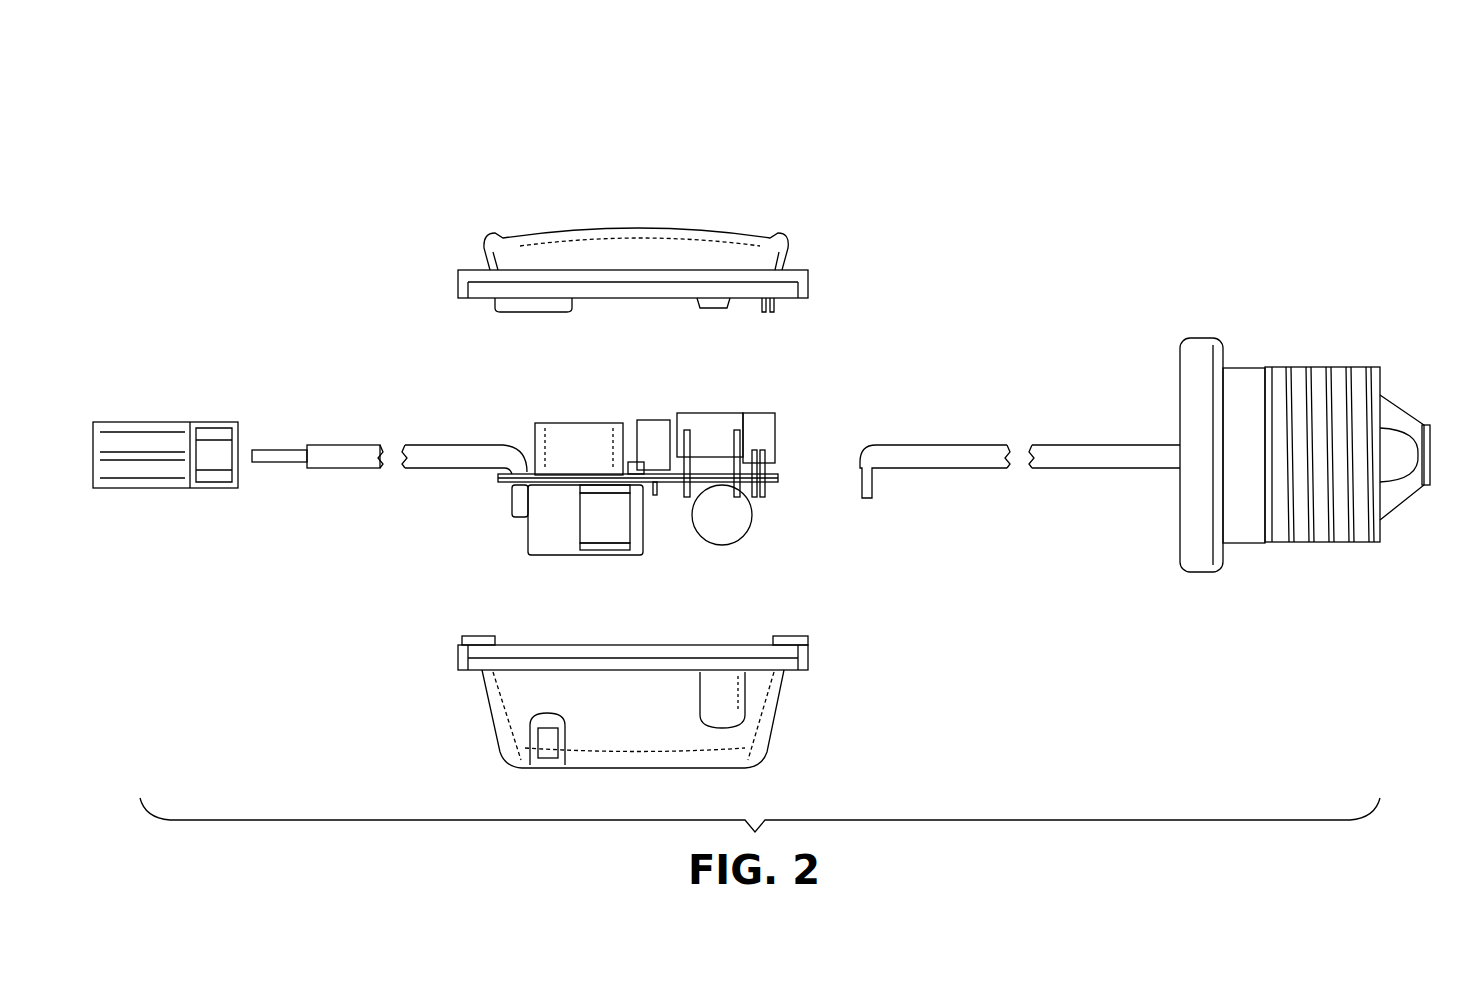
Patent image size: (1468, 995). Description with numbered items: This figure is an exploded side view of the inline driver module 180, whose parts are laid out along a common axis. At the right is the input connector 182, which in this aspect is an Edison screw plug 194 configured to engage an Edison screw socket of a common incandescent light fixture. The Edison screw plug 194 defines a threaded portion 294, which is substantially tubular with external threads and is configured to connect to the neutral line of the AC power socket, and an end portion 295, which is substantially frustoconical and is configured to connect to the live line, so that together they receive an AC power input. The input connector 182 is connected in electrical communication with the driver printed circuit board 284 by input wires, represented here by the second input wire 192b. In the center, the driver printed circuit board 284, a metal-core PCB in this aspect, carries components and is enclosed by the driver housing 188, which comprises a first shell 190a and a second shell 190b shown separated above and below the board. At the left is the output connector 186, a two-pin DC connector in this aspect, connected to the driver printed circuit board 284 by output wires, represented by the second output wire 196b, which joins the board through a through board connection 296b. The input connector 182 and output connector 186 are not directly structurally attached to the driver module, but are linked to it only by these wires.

The inline driver module 180 is at (585, 85).
The input connector 182 is at (1203, 350).
The output connector 186 is at (150, 445).
The driver housing 188 is at (500, 252).
The first shell 190a is at (737, 228).
The second shell 190b is at (785, 722).
The second input wire 192b is at (948, 455).
The Edison screw plug 194 is at (1200, 555).
The second output wire 196b is at (340, 455).
The driver printed circuit board 284 is at (780, 482).
The threaded portion 294 is at (1342, 385).
The end portion 295 is at (1400, 425).
The through board connection 296b is at (512, 492).